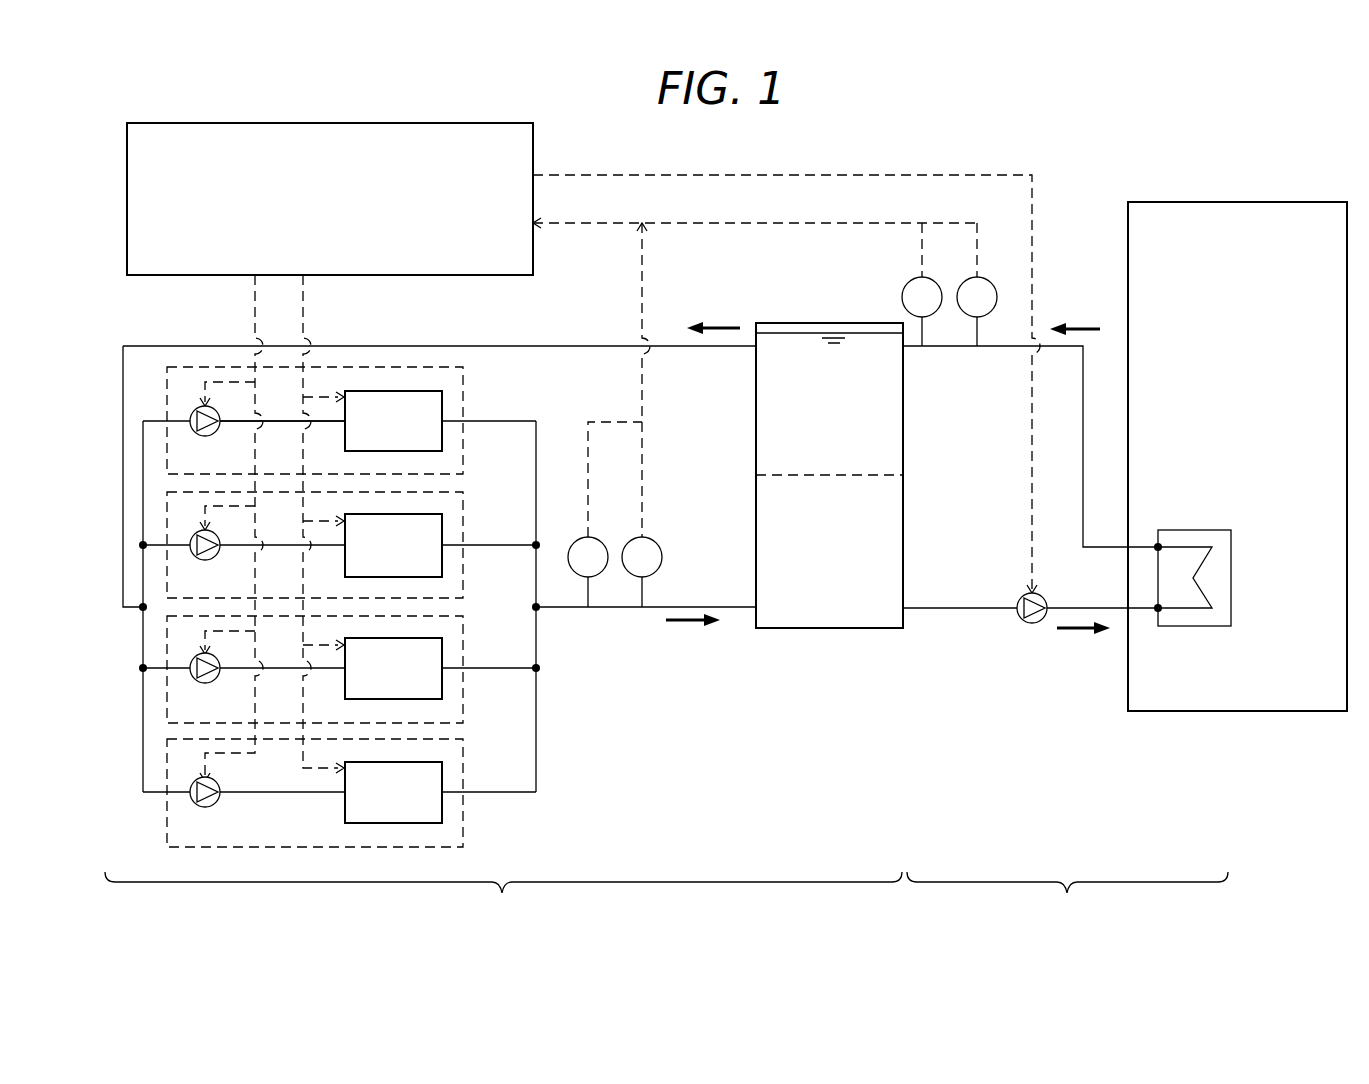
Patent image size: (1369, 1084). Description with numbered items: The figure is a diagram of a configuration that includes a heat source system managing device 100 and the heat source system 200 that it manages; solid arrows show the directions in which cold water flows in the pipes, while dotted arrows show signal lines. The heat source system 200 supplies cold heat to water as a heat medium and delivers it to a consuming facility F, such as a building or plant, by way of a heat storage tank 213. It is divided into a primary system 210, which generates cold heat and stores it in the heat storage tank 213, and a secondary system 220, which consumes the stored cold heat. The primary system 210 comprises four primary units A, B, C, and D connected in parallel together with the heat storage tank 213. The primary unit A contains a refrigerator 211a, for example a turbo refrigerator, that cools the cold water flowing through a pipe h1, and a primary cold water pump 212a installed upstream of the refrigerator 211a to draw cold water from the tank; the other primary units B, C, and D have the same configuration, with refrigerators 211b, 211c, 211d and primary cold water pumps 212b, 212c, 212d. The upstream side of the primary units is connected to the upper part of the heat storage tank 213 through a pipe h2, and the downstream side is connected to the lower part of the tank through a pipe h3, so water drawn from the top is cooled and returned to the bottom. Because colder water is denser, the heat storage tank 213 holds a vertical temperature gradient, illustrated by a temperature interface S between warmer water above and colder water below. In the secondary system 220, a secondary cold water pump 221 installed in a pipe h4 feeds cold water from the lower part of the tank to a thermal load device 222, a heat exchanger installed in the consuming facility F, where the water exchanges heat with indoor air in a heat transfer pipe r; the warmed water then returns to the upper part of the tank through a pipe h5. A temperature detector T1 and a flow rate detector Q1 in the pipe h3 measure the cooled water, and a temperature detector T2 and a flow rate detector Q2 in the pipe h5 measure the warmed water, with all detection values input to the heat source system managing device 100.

The heat source system managing device 100 is at (534, 141).
The heat source system 200 is at (893, 728).
The primary system 210 is at (503, 903).
The secondary system 220 is at (1067, 903).
The refrigerator 211a is at (443, 405).
The refrigerator 211b is at (443, 528).
The refrigerator 211c is at (443, 652).
The refrigerator 211d is at (443, 775).
The primary cold water pump 212a is at (190, 414).
The primary cold water pump 212b is at (190, 538).
The primary cold water pump 212c is at (190, 661).
The primary cold water pump 212d is at (190, 785).
The heat storage tank 213 is at (825, 629).
The secondary cold water pump 221 is at (1027, 624).
The thermal load device 222 is at (1190, 628).
The primary unit A is at (463, 388).
The primary unit B is at (463, 508).
The primary unit C is at (463, 633).
The primary unit D is at (463, 752).
The consuming facility F is at (1168, 202).
The heat transfer pipe r is at (1206, 570).
The temperature interface S is at (823, 472).
The temperature detector T1 is at (588, 572).
The flow rate detector Q1 is at (642, 572).
The temperature detector T2 is at (922, 311).
The flow rate detector Q2 is at (977, 311).
The pipe h1 is at (322, 417).
The pipe h2 is at (568, 345).
The pipe h3 is at (730, 609).
The pipe h4 is at (953, 610).
The pipe h5 is at (1000, 346).